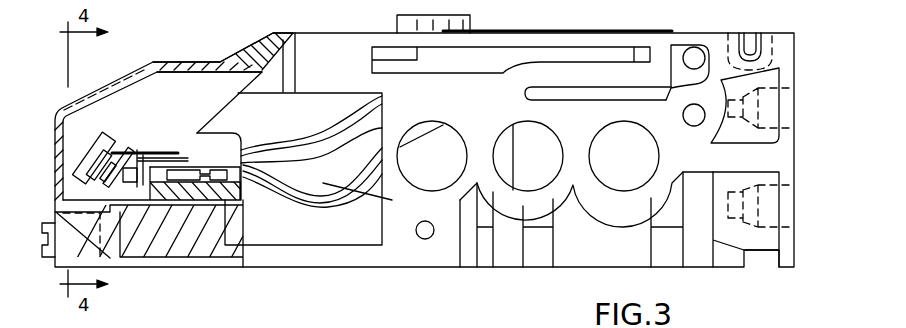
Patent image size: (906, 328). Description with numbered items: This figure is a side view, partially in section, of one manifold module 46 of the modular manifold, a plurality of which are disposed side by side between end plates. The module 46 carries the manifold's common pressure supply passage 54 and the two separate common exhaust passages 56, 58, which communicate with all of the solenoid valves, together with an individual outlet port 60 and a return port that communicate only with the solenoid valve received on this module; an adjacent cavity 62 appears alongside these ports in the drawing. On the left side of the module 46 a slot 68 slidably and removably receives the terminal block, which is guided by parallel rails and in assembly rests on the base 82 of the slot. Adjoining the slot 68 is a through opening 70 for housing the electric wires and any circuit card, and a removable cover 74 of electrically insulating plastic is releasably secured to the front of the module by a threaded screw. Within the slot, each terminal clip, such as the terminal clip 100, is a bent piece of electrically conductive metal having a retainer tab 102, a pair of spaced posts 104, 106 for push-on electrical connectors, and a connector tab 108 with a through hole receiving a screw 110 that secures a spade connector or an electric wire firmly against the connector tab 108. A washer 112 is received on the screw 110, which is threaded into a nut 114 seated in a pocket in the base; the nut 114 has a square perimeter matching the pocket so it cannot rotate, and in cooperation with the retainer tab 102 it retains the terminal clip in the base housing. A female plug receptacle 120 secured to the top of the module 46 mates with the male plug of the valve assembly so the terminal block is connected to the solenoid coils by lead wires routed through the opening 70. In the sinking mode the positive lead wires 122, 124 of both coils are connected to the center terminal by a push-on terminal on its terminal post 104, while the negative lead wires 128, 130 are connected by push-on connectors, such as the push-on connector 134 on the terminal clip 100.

The manifold module 46 is at (714, 30).
The common pressure supply passage 54 is at (527, 191).
The common exhaust passage 56 is at (428, 191).
The common exhaust passage 58 is at (617, 190).
The outlet port 60 is at (789, 115).
The cavity 62 is at (789, 210).
The slot 68 is at (221, 82).
The through opening 70 is at (330, 237).
The removable cover 74 is at (192, 62).
The base 82 is at (193, 195).
The terminal clip 100 is at (113, 135).
The retainer tab 102 is at (155, 192).
The terminal post 104 is at (177, 158).
The terminal post 106 is at (168, 150).
The connector tab 108 is at (76, 191).
The screw 110 is at (88, 176).
The washer 112 is at (100, 142).
The nut 114 is at (124, 157).
The female plug receptacle 120 is at (460, 15).
The lead wire 122 is at (320, 160).
The lead wire 124 is at (310, 200).
The negative lead wire 128 is at (268, 143).
The negative lead wire 130 is at (373, 199).
The push-on connector 134 is at (224, 202).